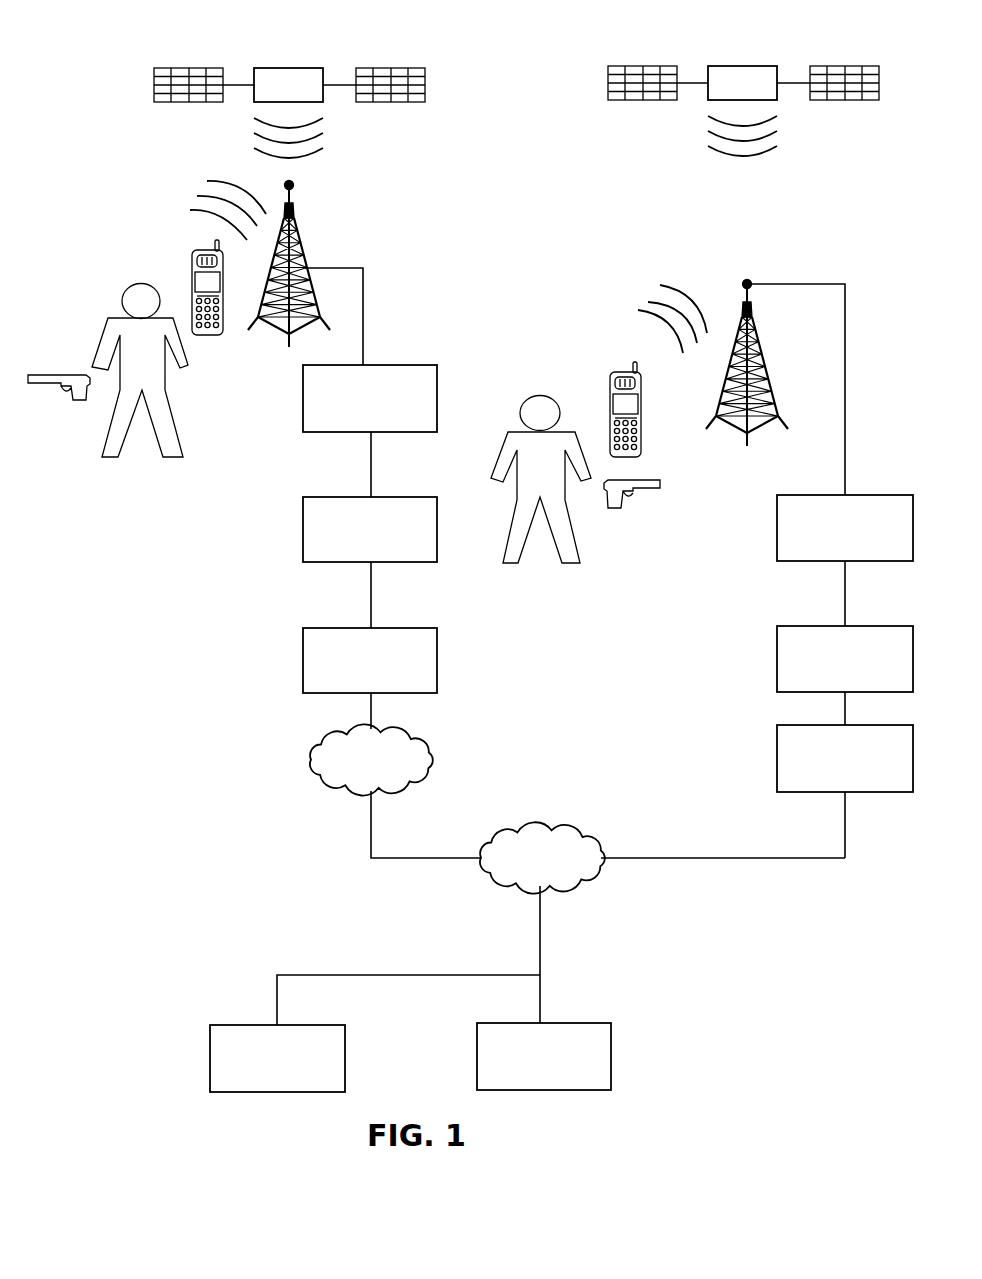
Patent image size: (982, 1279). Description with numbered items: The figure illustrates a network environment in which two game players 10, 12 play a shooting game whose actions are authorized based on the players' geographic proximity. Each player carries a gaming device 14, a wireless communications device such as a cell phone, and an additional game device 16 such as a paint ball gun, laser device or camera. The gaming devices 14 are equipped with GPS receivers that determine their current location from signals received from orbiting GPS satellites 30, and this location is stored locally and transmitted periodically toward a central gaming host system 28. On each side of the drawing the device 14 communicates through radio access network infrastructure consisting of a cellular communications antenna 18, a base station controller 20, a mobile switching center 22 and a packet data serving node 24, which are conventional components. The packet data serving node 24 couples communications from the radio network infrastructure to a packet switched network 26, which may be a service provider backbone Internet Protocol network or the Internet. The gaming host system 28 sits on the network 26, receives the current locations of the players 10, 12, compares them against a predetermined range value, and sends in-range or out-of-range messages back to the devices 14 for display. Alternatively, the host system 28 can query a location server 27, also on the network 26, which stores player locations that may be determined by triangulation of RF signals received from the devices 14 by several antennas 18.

The game player 10 is at (103, 459).
The game player 12 is at (508, 565).
The gaming device 14 is at (192, 288).
The game device 16 is at (52, 376).
The cellular communications antenna 18 is at (302, 244).
The base station controller 20 is at (303, 398).
The mobile switching center 22 is at (303, 530).
The packet data serving node 24 is at (303, 660).
The packet switched network 26 is at (305, 770).
The location server 27 is at (210, 1061).
The gaming host system 28 is at (611, 1058).
The GPS satellite 30 is at (283, 68).